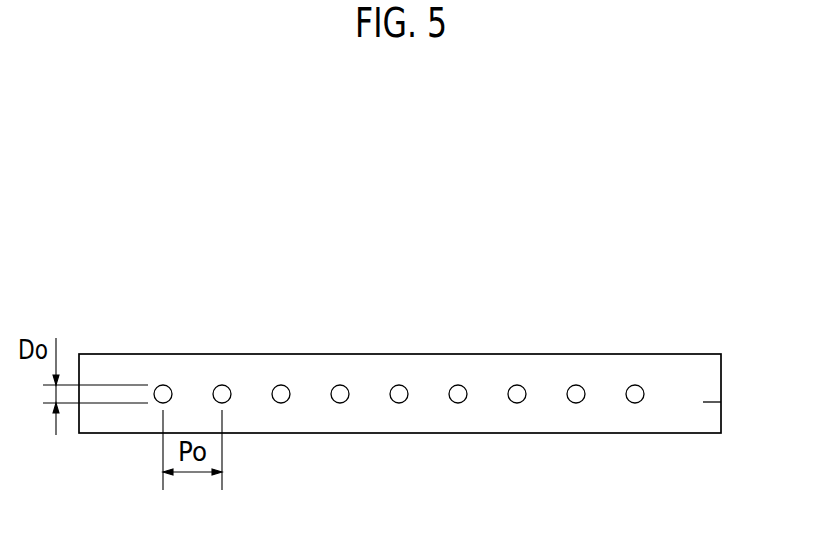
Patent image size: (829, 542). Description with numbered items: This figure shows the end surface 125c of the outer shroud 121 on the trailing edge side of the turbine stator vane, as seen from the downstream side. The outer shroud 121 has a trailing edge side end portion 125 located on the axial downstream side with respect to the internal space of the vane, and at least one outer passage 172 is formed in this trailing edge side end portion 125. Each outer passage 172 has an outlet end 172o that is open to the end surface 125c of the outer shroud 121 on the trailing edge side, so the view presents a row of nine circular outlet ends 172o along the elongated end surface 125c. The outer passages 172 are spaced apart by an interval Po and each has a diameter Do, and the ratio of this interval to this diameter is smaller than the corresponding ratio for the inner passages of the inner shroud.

The trailing edge side end portion 125 is at (428, 347).
The outer shroud 121 is at (697, 353).
The end surface 125c is at (721, 402).
The outer passage 172 is at (392, 388).
The outlet end 172o is at (163, 385).